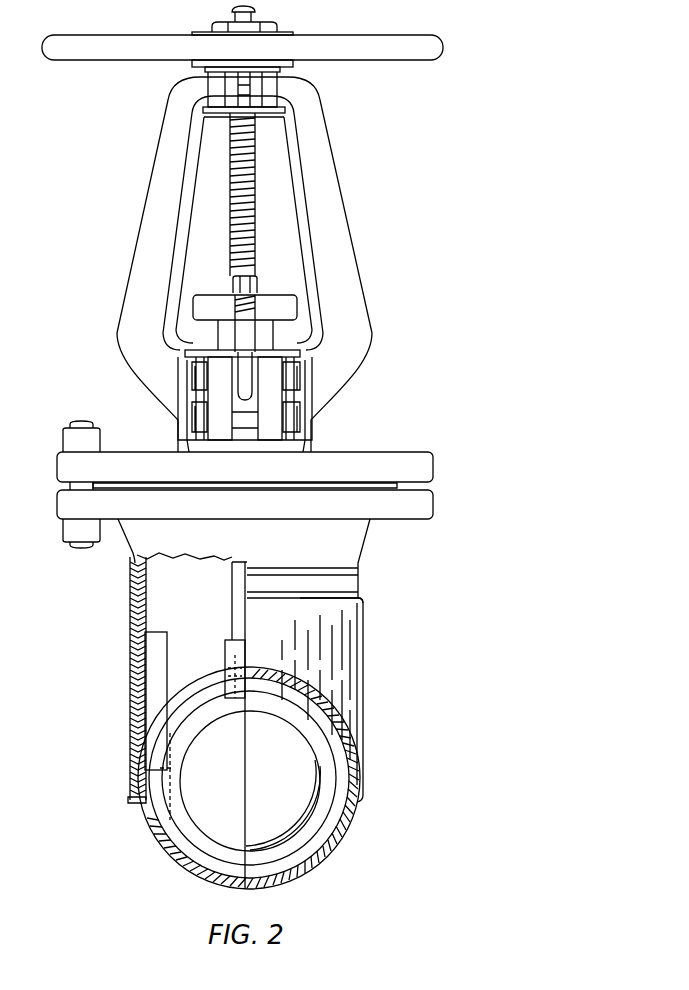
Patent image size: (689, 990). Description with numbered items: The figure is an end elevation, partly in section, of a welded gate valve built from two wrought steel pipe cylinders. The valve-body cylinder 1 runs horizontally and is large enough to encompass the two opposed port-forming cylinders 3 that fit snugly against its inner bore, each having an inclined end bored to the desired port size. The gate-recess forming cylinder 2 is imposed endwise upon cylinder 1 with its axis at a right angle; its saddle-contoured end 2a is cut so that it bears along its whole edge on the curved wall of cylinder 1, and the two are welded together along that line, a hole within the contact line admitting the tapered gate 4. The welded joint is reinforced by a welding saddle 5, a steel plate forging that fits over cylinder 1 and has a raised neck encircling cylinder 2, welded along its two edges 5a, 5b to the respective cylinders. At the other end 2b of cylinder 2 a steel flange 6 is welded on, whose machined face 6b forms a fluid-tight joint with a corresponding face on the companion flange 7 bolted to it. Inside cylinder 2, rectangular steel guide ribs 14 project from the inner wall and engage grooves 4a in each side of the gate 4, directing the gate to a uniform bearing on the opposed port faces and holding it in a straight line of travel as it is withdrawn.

The valve-body cylinder 1 is at (335, 845).
The gate-recess forming cylinder 2 is at (132, 587).
The saddle-contoured end of cylinder 2 2a is at (225, 677).
The end of cylinder 2 2b is at (358, 568).
The port-forming cylinder 3 is at (197, 840).
The tapered gate 4 is at (249, 713).
The groove in gate 4a is at (172, 790).
The welding saddle 5 is at (128, 658).
The edge of welding saddle 5a is at (130, 803).
The edge of welding saddle 5b is at (325, 600).
The steel flange 6 is at (433, 508).
The machined face 6b is at (437, 485).
The companion flange 7 is at (432, 462).
The guide rib 14 is at (167, 633).